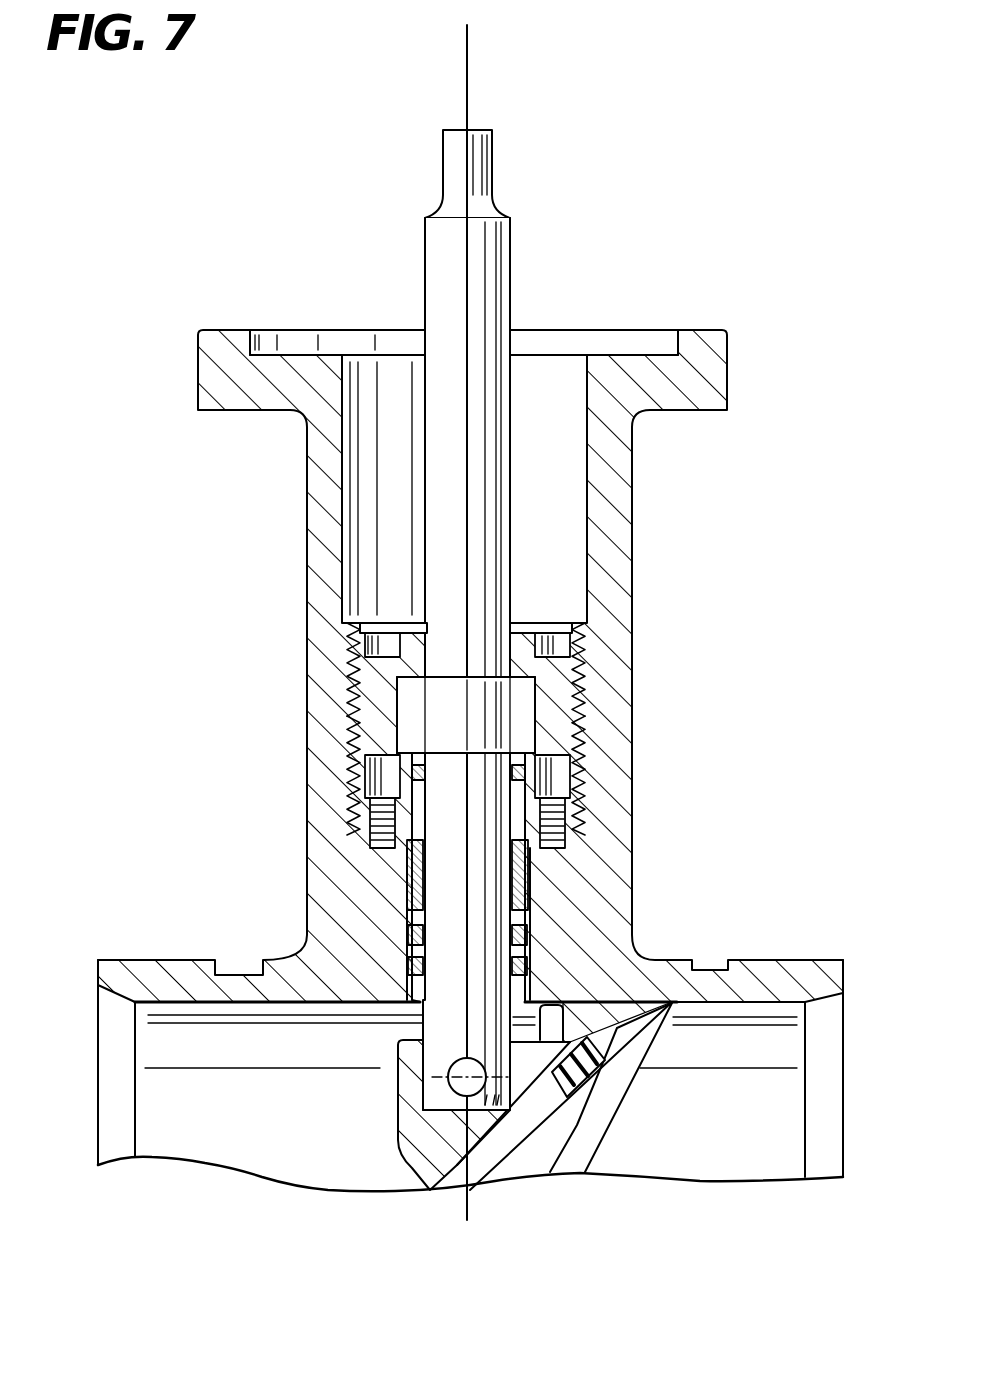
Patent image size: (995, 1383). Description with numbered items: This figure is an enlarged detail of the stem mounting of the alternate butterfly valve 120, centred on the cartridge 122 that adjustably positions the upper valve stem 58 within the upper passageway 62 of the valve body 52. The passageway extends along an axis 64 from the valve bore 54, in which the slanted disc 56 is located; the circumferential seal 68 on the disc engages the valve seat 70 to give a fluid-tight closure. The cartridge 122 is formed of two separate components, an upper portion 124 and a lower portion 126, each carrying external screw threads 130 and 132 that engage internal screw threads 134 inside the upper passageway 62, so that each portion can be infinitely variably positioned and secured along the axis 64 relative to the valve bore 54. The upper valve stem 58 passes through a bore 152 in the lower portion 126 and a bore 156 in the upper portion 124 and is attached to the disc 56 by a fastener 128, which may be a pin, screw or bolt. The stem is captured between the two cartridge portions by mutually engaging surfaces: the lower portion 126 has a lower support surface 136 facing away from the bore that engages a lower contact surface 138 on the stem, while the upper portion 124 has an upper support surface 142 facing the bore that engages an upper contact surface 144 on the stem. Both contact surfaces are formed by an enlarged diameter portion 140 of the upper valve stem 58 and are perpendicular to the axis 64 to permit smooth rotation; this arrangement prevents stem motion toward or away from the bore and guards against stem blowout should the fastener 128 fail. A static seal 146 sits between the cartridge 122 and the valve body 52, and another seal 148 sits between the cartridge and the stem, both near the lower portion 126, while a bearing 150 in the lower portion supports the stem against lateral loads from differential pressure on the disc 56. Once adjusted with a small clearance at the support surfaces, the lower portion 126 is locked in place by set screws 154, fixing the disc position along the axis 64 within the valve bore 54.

The valve body 52 is at (810, 972).
The valve bore 54 is at (773, 1162).
The slanted disc 56 is at (433, 1150).
The upper valve stem 58 is at (478, 272).
The upper passageway 62 is at (553, 467).
The axis 64 is at (467, 73).
The circumferential seal 68 is at (613, 1098).
The valve seat 70 is at (625, 1075).
The butterfly valve 120 is at (852, 586).
The cartridge 122 is at (520, 675).
The upper portion 124 is at (427, 700).
The lower portion 126 is at (365, 785).
The fastener 128 is at (440, 1076).
The external screw threads 130 is at (350, 712).
The external screw threads 132 is at (362, 812).
The internal screw threads 134 is at (580, 775).
The lower support surface 136 is at (522, 748).
The lower contact surface 138 is at (535, 710).
The enlarged diameter portion 140 is at (352, 650).
The upper support surface 142 is at (528, 632).
The upper contact surface 144 is at (575, 680).
The static seal 146 is at (530, 968).
The seal 148 is at (410, 922).
The bearing 150 is at (530, 905).
The bore 152 is at (410, 858).
The set screws 154 is at (405, 883).
The bore 156 is at (365, 628).